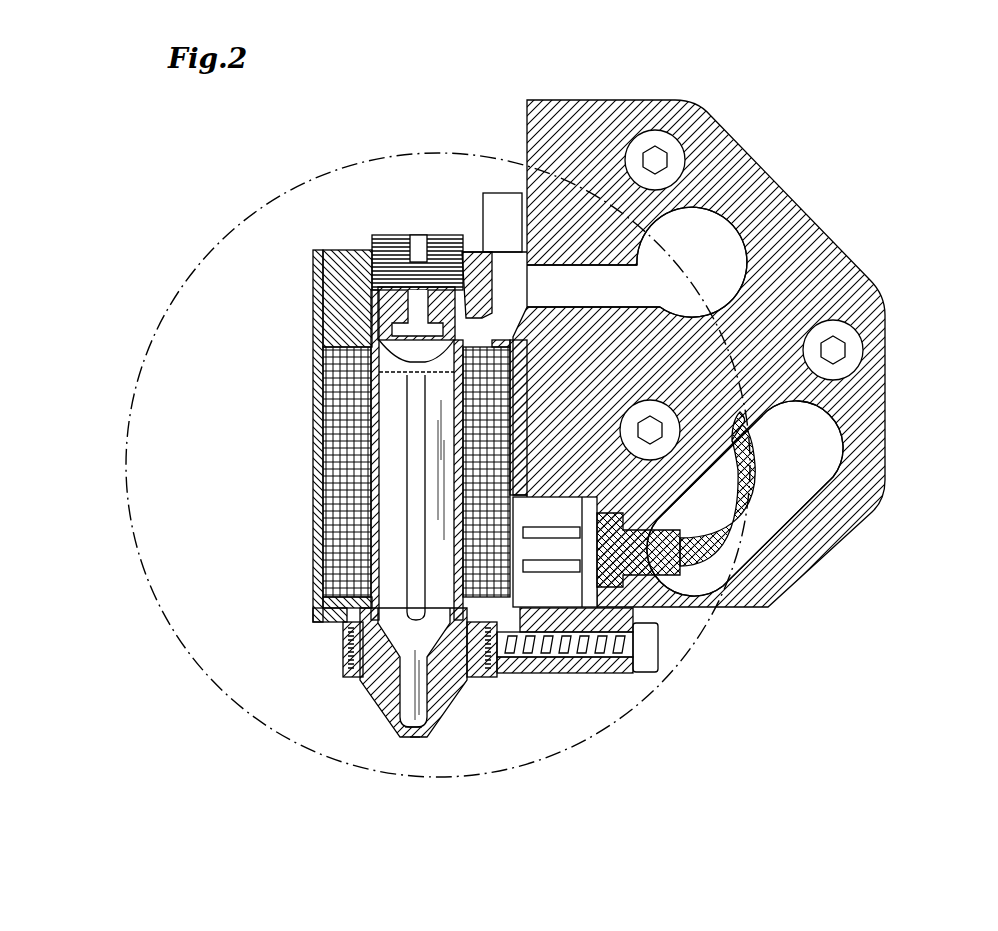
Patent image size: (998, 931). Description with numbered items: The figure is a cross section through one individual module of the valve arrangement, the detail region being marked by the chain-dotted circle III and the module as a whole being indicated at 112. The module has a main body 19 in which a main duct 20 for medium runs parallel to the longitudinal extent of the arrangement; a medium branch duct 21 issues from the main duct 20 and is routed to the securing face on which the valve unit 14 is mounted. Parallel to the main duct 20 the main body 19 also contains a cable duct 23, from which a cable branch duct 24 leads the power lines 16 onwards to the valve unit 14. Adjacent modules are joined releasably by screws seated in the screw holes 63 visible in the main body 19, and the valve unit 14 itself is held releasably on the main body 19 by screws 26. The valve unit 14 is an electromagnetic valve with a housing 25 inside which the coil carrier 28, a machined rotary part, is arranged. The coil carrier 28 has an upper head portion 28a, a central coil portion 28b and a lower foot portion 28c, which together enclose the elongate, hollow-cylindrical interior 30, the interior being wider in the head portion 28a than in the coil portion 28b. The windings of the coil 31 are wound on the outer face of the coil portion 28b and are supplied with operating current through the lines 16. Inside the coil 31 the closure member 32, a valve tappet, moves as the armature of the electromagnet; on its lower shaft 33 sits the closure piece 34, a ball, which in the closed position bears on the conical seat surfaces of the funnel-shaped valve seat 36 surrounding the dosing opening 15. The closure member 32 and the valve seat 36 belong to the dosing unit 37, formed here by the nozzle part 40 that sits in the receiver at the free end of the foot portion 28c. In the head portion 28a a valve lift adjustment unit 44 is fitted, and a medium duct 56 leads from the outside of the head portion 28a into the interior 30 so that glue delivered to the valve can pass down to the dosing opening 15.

The section line III is at (197, 272).
The valve unit 14 is at (544, 462).
The dosing opening 15 is at (413, 745).
The power lines 16 is at (755, 520).
The main body 19 is at (633, 401).
The main duct 20 is at (722, 255).
The medium branch duct 21 is at (560, 288).
The cable duct 23 is at (825, 455).
The cable branch duct 24 is at (645, 585).
The housing 25 is at (315, 610).
The screws 26 is at (583, 653).
The coil carrier 28 is at (554, 425).
The head portion 28a is at (345, 272).
The coil portion 28b is at (370, 387).
The foot portion 28c is at (347, 635).
The interior 30 is at (382, 715).
The coil 31 is at (335, 450).
The closure member 32 is at (433, 573).
The lower shaft 33 is at (395, 700).
The closure piece 34 is at (430, 740).
The valve seat 36 is at (460, 695).
The dosing unit 37 is at (490, 700).
The nozzle part 40 is at (561, 462).
The valve lift adjustment unit 44 is at (415, 203).
The medium duct 56 is at (487, 248).
The screw holes 63 is at (855, 350).
The mounting unit 112 is at (760, 108).